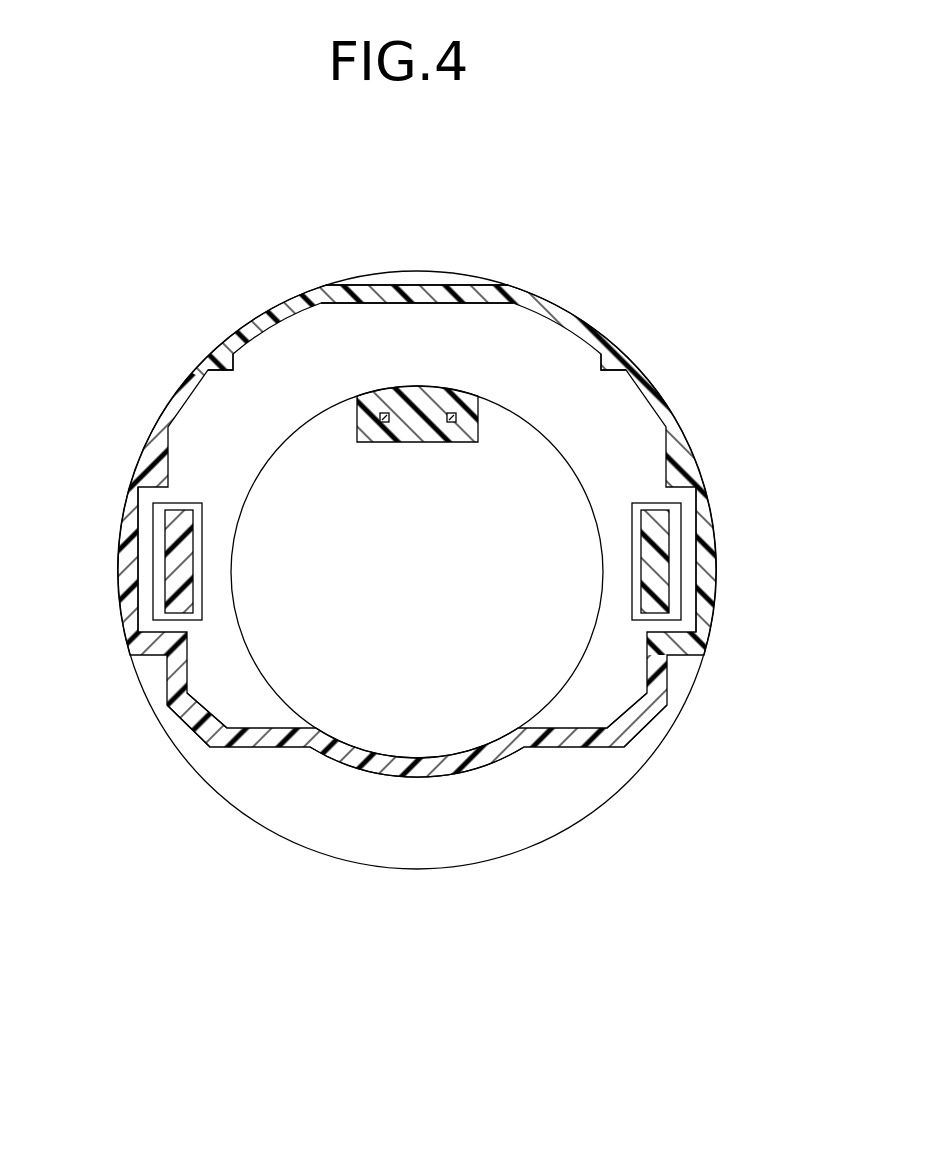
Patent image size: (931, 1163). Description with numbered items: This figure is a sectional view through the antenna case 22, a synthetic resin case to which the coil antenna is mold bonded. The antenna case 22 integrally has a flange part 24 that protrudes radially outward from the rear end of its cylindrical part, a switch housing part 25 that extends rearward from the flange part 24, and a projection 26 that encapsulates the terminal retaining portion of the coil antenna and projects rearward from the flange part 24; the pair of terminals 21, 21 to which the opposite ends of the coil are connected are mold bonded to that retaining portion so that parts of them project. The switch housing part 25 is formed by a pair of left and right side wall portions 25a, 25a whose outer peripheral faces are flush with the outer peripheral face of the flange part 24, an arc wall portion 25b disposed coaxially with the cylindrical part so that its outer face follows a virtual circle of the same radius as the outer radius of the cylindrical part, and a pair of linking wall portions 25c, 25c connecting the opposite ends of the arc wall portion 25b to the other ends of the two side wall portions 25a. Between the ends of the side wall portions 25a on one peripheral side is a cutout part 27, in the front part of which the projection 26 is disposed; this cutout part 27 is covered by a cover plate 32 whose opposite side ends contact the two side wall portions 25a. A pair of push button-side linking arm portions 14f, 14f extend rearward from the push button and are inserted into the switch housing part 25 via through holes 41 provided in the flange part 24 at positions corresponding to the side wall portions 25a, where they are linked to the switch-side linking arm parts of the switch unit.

The push button-side linking arm portion 14f is at (173, 577).
The terminal 21 is at (382, 424).
The antenna case 22 is at (426, 882).
The flange part 24 is at (326, 838).
The switch housing part 25 is at (286, 764).
The side wall portion 25a is at (146, 456).
The arc wall portion 25b is at (482, 771).
The linking wall portion 25c is at (186, 718).
The projection 26 is at (418, 434).
The cutout part 27 is at (210, 357).
The cover plate 32 is at (447, 290).
The through hole 41 is at (170, 530).